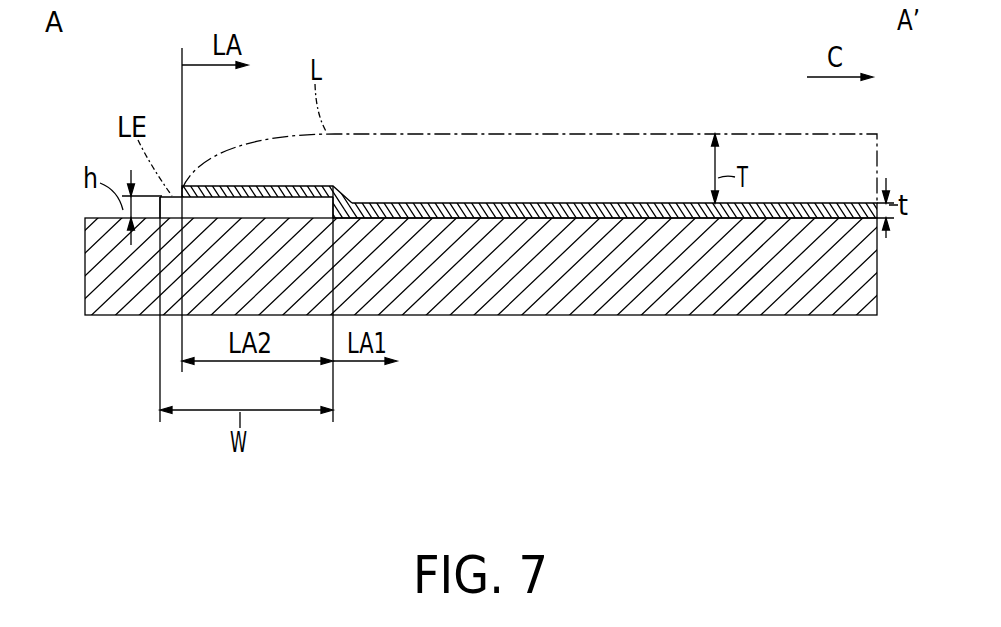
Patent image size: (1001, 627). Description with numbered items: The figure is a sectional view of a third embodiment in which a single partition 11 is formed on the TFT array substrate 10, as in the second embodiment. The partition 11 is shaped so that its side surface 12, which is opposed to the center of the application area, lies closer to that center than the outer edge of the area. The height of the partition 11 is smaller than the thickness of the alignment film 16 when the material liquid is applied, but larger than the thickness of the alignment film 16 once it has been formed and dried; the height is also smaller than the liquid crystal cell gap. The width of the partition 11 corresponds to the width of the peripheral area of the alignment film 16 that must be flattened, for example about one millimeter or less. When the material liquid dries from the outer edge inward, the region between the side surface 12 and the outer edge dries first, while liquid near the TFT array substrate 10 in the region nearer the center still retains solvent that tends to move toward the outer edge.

The TFT array substrate 10 is at (673, 293).
The partition 11 is at (237, 208).
The side surface 12 is at (347, 200).
The alignment film 16 is at (566, 205).